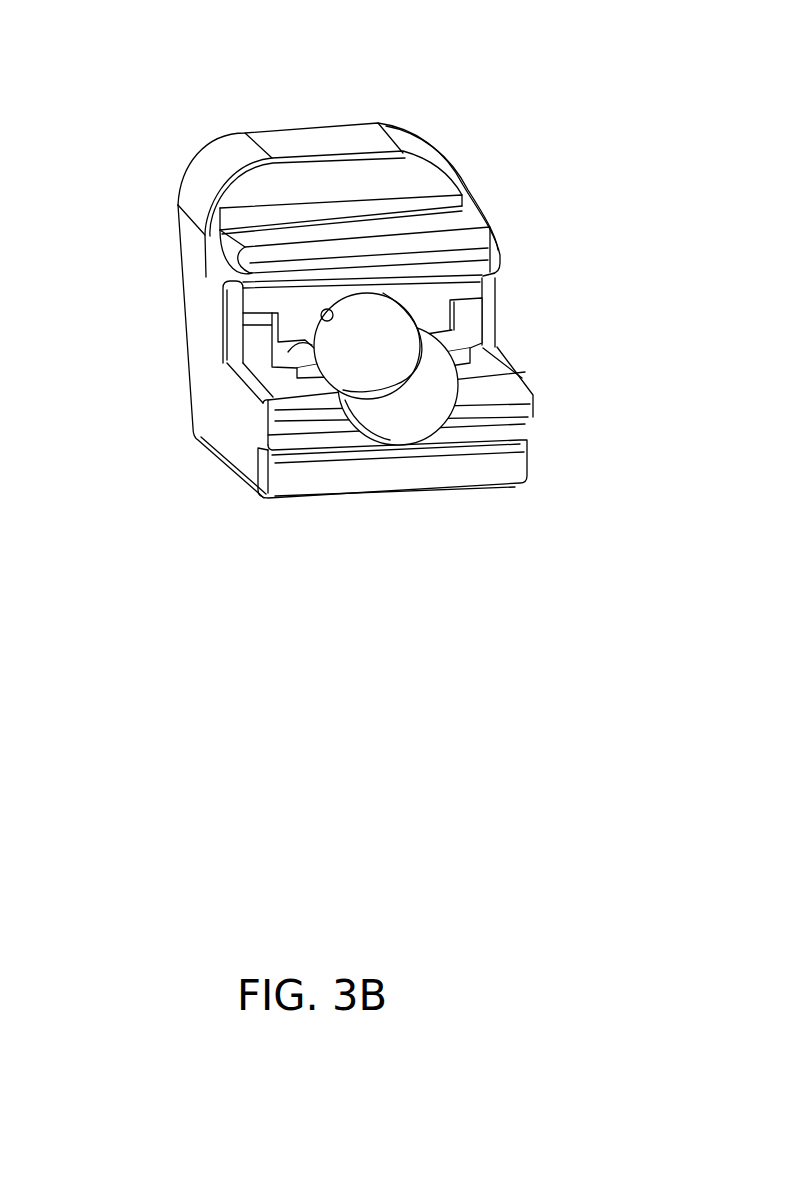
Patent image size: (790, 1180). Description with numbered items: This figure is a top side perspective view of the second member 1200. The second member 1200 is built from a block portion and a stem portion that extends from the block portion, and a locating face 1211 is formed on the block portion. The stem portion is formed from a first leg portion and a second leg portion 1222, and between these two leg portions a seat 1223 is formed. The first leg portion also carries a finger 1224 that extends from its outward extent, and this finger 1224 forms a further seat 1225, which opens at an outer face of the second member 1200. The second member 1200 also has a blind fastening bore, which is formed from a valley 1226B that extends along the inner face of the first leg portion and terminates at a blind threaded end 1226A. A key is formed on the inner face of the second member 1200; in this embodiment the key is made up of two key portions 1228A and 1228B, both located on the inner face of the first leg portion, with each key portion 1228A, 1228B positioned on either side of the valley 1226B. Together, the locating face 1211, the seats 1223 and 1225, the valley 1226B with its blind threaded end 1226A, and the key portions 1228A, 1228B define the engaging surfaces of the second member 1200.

The second member 1200 is at (370, 327).
The locating face 1211 is at (350, 177).
The second leg portion 1222 is at (460, 245).
The seat 1223 is at (253, 320).
The finger 1224 is at (537, 413).
The seat 1225 is at (443, 470).
The blind threaded end 1226A is at (445, 345).
The valley 1226B is at (403, 420).
The key portion 1228A is at (273, 337).
The key portion 1228B is at (498, 323).